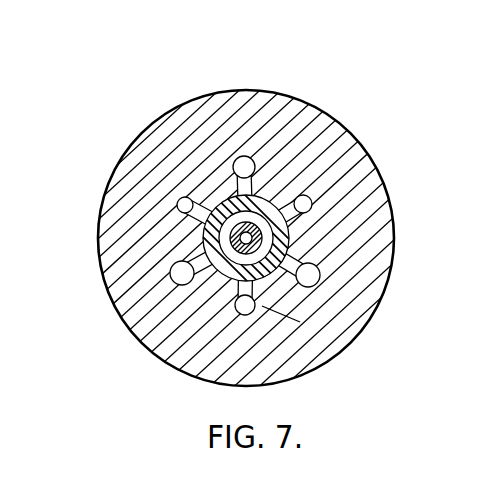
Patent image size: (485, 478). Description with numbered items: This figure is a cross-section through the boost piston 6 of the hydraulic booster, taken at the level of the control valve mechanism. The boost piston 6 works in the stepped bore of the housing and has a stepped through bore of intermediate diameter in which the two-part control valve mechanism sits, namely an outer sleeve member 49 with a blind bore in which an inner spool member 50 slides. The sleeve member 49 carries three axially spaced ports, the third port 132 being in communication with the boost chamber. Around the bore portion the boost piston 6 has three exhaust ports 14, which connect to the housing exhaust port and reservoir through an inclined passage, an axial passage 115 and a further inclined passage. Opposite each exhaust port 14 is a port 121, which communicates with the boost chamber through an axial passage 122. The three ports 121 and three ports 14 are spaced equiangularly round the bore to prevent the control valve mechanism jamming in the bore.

The boost piston 6 is at (317, 137).
The exhaust port 14 is at (200, 199).
The outer sleeve member 49 is at (300, 322).
The inner spool member 50 is at (270, 251).
The axial passage 115 is at (288, 212).
The port 121 is at (268, 193).
The axial passage 122 is at (243, 156).
The third port 132 is at (230, 238).